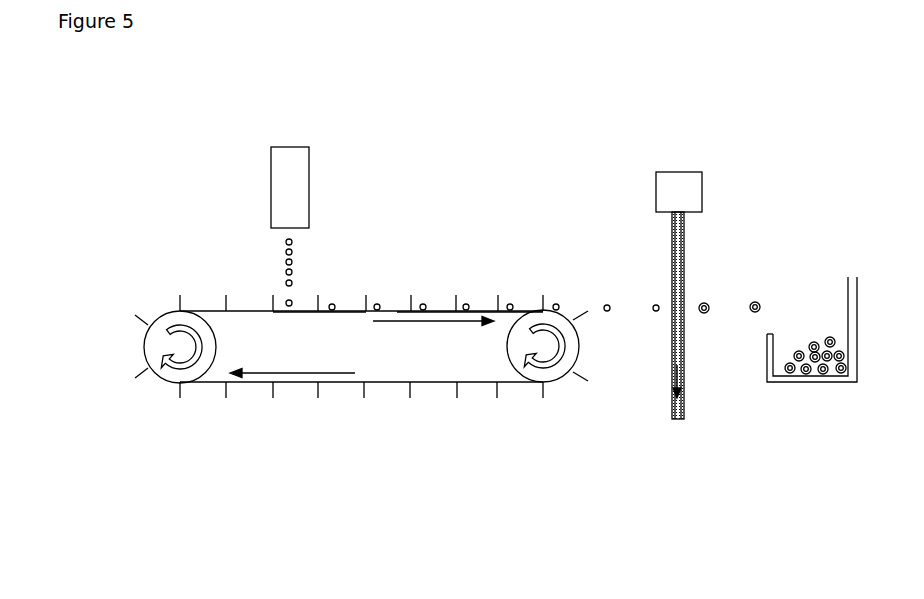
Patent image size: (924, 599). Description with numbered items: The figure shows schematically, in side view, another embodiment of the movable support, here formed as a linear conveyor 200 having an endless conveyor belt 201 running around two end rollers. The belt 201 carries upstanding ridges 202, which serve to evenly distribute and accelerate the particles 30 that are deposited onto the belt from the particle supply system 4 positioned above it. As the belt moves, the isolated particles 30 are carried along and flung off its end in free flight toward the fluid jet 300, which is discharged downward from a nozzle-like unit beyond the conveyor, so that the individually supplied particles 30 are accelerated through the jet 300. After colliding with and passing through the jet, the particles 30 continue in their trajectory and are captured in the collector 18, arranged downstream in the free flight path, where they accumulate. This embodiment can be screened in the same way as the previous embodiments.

The particle supply system 4 is at (278, 176).
The linear conveyor 200 is at (392, 417).
The upstanding ridges 202 is at (367, 311).
The endless conveyor belt 201 is at (397, 311).
The particles 30 is at (432, 305).
The fluid jet 300 is at (687, 257).
The collector 18 is at (840, 383).